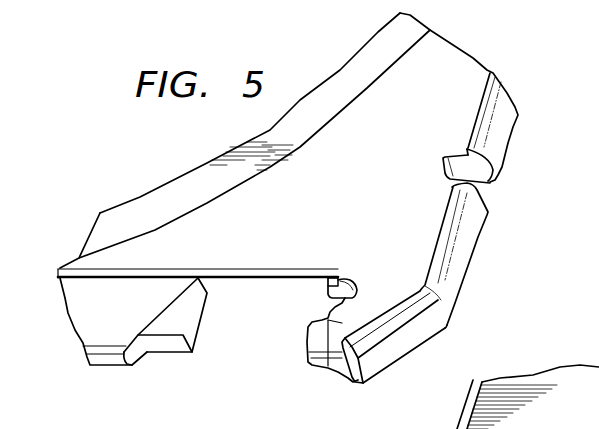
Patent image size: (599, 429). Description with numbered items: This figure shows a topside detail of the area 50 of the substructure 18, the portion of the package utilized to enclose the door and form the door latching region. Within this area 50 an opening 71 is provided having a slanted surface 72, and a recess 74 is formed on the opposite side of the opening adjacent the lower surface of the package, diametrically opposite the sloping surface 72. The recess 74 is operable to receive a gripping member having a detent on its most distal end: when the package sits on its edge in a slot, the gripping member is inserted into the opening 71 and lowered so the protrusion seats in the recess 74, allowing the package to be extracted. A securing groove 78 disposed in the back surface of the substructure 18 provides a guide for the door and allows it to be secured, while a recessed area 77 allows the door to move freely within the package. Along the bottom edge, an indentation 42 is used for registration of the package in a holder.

The substructure 18 is at (455, 57).
The indentation 42 is at (475, 167).
The area 50 is at (141, 165).
The opening 71 is at (165, 347).
The slanted surface 72 is at (177, 313).
The recess 74 is at (345, 278).
The recessed area 77 is at (75, 307).
The securing groove 78 is at (170, 272).